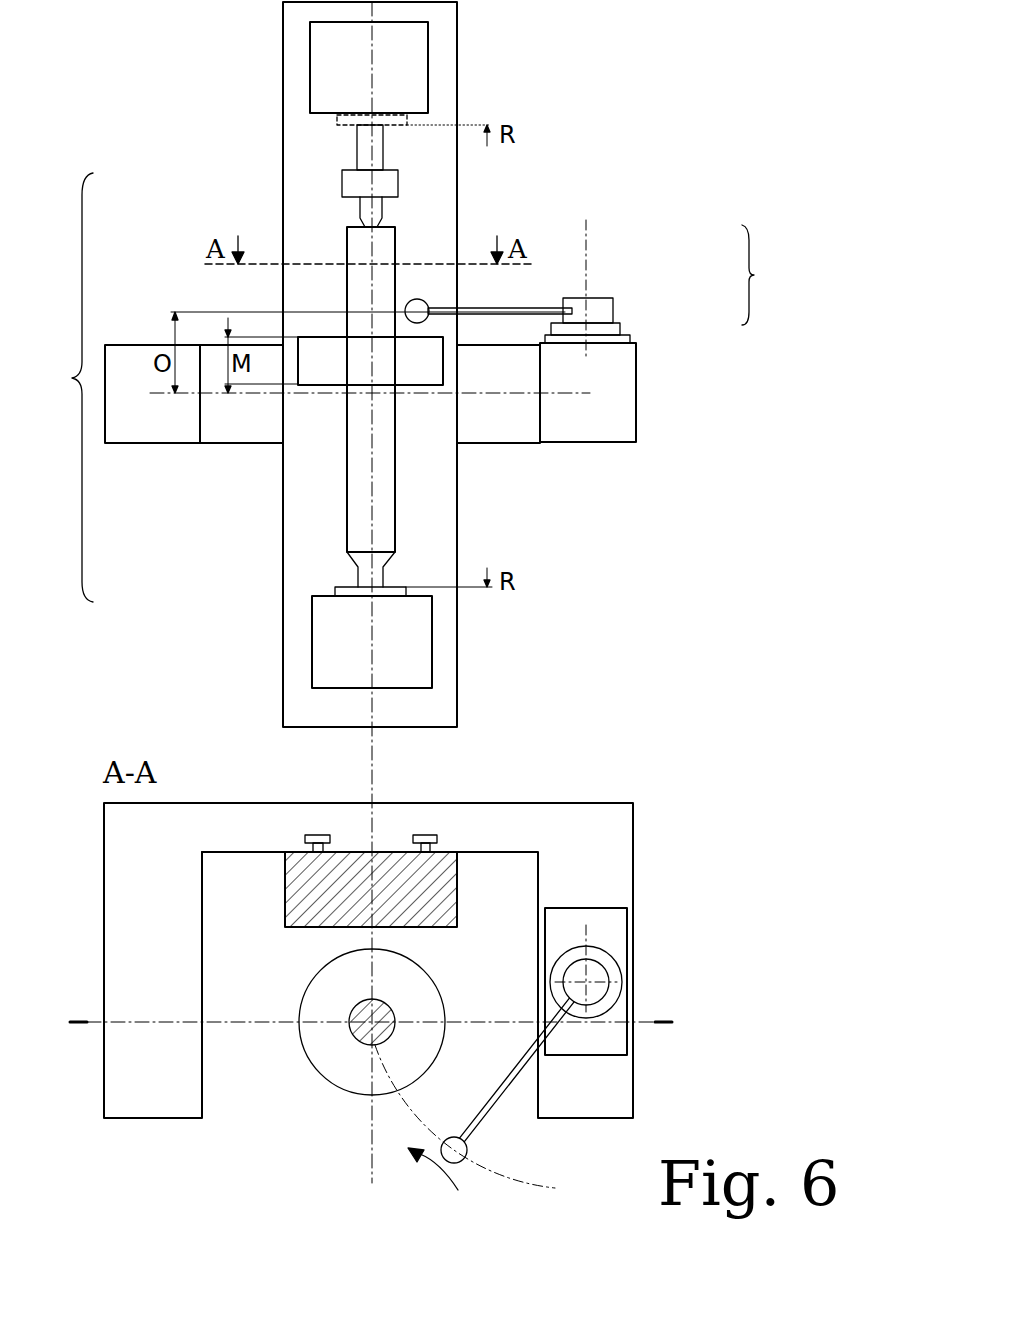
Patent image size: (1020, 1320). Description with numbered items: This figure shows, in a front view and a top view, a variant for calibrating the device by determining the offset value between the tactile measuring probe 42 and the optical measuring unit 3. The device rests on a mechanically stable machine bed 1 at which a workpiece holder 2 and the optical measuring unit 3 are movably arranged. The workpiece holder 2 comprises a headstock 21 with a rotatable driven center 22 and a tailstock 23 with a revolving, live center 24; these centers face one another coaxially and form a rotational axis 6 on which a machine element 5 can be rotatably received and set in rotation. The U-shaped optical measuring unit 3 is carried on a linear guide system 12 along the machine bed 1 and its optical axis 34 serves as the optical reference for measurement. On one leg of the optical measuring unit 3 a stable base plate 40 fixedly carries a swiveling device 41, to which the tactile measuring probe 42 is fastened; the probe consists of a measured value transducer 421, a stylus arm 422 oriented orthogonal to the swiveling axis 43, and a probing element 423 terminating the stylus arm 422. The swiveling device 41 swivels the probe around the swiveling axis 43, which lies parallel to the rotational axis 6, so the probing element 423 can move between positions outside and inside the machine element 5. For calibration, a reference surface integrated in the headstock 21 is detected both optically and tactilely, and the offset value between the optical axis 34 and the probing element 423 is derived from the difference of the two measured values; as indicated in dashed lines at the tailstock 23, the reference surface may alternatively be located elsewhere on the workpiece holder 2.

The machine bed 1 is at (317, 897).
The workpiece holder 2 is at (70, 387).
The optical measuring unit 3 is at (610, 422).
The machine element 5 is at (388, 467).
The rotational axis 6 is at (370, 35).
The linear guide system 12 is at (323, 835).
The headstock 21 is at (342, 617).
The driven center 22 is at (365, 572).
The tailstock 23 is at (328, 88).
The revolving center 24 is at (362, 210).
The optical axis 34 is at (480, 393).
The base plate 40 is at (618, 338).
The swiveling device 41 is at (615, 328).
The tactile measuring probe 42 is at (520, 1077).
The swiveling axis 43 is at (586, 262).
The measured value transducer 421 is at (605, 315).
The stylus arm 422 is at (518, 306).
The probing element 423 is at (417, 300).